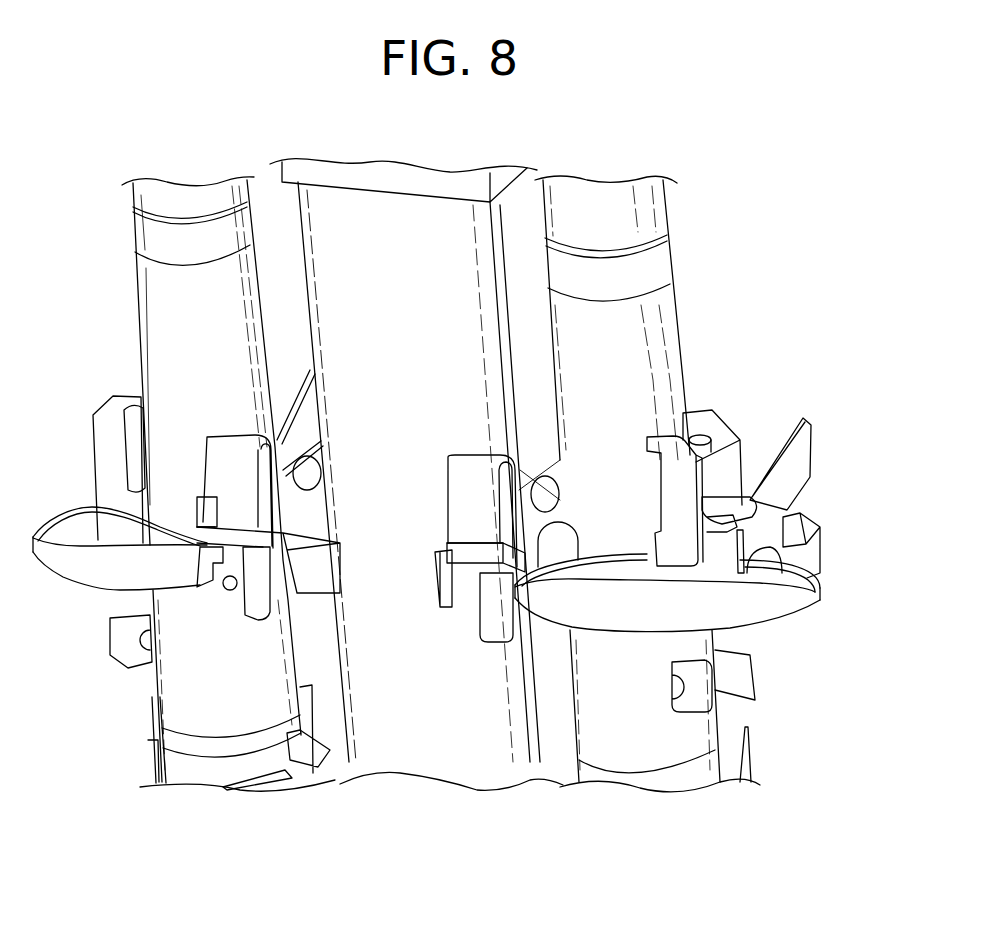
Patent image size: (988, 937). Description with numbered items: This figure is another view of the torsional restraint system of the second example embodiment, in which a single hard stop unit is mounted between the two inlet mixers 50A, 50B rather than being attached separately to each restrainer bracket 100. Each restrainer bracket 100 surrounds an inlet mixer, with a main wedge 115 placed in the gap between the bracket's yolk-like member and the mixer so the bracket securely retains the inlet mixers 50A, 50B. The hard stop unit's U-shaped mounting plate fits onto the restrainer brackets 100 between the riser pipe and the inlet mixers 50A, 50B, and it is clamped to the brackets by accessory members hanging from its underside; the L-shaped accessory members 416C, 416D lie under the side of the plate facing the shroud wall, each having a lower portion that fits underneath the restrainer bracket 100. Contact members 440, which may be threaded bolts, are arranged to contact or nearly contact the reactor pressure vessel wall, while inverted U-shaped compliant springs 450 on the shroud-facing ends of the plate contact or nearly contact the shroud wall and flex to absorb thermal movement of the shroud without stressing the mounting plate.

The inlet mixer 50A is at (148, 364).
The inlet mixer 50B is at (668, 322).
The contact member 440 is at (298, 434).
The L-shaped accessory member 416C is at (272, 590).
The L-shaped accessory member 416D is at (505, 640).
The compliant spring 450 is at (240, 515).
The main wedge 115 is at (752, 472).
The restrainer bracket 100 is at (813, 527).